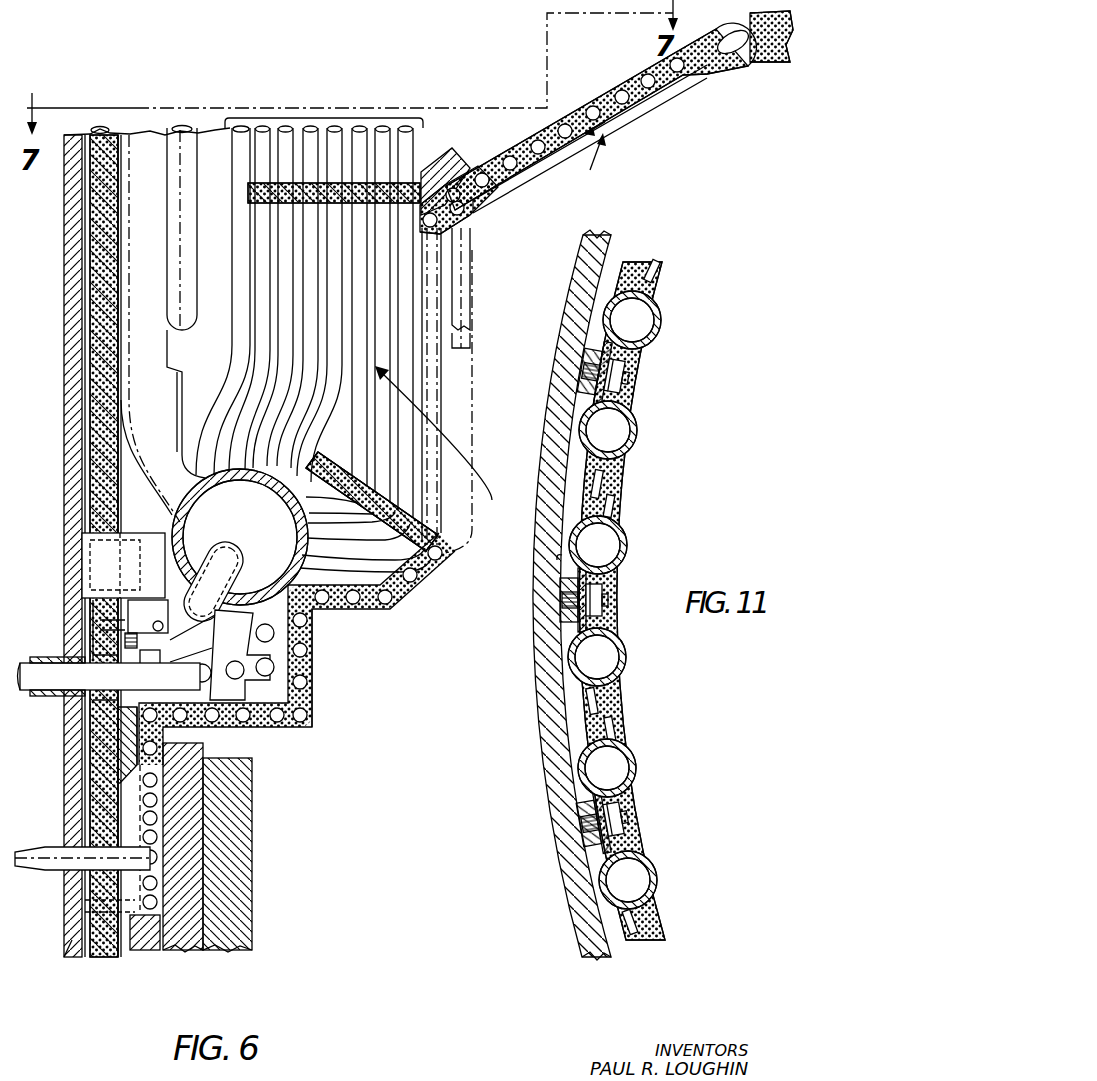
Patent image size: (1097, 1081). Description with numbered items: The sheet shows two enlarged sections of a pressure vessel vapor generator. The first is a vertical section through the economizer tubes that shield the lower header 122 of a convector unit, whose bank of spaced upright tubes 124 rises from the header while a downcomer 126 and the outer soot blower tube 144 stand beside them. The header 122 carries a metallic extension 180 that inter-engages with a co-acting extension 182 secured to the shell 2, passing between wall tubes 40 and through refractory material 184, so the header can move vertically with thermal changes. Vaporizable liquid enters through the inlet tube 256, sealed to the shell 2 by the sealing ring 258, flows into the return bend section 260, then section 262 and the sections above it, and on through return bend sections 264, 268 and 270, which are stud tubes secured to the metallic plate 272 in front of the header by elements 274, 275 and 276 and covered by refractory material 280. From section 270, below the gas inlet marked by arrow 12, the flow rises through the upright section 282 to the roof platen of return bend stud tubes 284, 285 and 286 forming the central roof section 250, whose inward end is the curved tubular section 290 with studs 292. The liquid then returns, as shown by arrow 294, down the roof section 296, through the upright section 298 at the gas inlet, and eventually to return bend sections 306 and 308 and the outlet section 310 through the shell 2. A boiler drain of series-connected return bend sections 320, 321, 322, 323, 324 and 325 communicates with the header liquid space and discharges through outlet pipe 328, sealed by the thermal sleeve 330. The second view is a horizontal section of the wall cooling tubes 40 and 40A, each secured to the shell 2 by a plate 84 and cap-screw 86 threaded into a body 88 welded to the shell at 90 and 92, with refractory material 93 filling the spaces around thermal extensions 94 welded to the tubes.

In FIG. 6, the cylindrical shell 2 is at (64, 230).
In FIG. 11, the cylindrical shell 2 is at (540, 443).
In FIG. 6, the arrow 12 is at (441, 443).
In FIG. 6, the wall tube 40 is at (100, 127).
In FIG. 11, the wall tube 40 is at (627, 540).
In FIG. 11, the wall tube 40A is at (623, 660).
In FIG. 11, the plate 84 is at (577, 628).
In FIG. 11, the cap-screw 86 is at (620, 377).
In FIG. 11, the body 88 is at (558, 587).
In FIG. 11, the weld 90 is at (557, 553).
In FIG. 11, the weld 92 is at (570, 620).
In FIG. 11, the refractory material 93 is at (618, 735).
In FIG. 11, the thermal extension 94 is at (610, 475).
In FIG. 6, the lower header 122 is at (185, 500).
In FIG. 6, the upright tubes 124 is at (325, 118).
In FIG. 6, the downcomer 126 is at (143, 398).
In FIG. 6, the outer soot blower tube 144 is at (187, 145).
In FIG. 6, the metallic extension 180 is at (177, 568).
In FIG. 6, the metallic extension 182 is at (100, 551).
In FIG. 6, the refractory material 184 is at (100, 297).
In FIG. 6, the central roof section 250 is at (640, 130).
In FIG. 6, the inlet tube 256 is at (13, 855).
In FIG. 6, the sealing ring 258 is at (100, 910).
In FIG. 6, the return bend tube section 260 is at (160, 857).
In FIG. 6, the return bend tube section 262 is at (157, 835).
In FIG. 6, the return bend tube section 264 is at (205, 748).
In FIG. 6, the return bend tube section 268 is at (312, 690).
In FIG. 6, the return bend tube section 270 is at (435, 565).
In FIG. 6, the metallic plate 272 is at (366, 584).
In FIG. 6, the securing element 274 is at (288, 587).
In FIG. 6, the securing element 275 is at (312, 612).
In FIG. 6, the securing element 276 is at (303, 555).
In FIG. 6, the refractory material 280 is at (300, 722).
In FIG. 6, the upright tubular section 282 is at (440, 415).
In FIG. 6, the return bend stud tube 284 is at (440, 172).
In FIG. 6, the return bend stud tube 285 is at (597, 100).
In FIG. 6, the return bend stud tube 286 is at (680, 72).
In FIG. 6, the curved tubular section 290 is at (756, 45).
In FIG. 6, the metallic stud 292 is at (770, 62).
In FIG. 6, the arrow 294 is at (596, 161).
In FIG. 6, the tubular section 296 is at (650, 95).
In FIG. 6, the upright tubular section 298 is at (460, 340).
In FIG. 6, the return bend tubular section 306 is at (157, 882).
In FIG. 6, the return bend tubular section 308 is at (160, 902).
In FIG. 6, the outlet tubular section 310 is at (72, 935).
In FIG. 6, the return bend tubular section 320 is at (220, 655).
In FIG. 6, the return bend tubular section 321 is at (277, 667).
In FIG. 6, the return bend tubular section 322 is at (247, 676).
In FIG. 6, the return bend tubular section 323 is at (210, 718).
In FIG. 6, the return bend tubular section 324 is at (140, 712).
In FIG. 6, the return bend tubular section 325 is at (122, 700).
In FIG. 6, the outlet pipe 328 is at (27, 675).
In FIG. 6, the thermal sleeve 330 is at (50, 660).